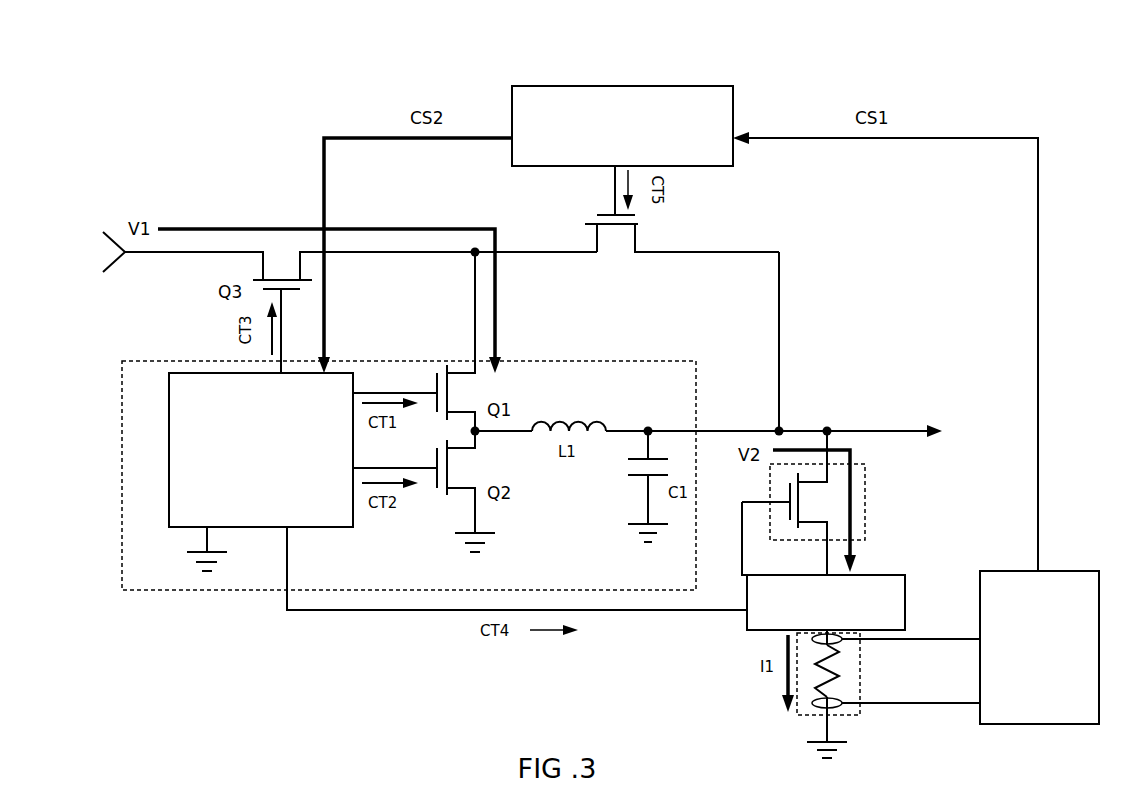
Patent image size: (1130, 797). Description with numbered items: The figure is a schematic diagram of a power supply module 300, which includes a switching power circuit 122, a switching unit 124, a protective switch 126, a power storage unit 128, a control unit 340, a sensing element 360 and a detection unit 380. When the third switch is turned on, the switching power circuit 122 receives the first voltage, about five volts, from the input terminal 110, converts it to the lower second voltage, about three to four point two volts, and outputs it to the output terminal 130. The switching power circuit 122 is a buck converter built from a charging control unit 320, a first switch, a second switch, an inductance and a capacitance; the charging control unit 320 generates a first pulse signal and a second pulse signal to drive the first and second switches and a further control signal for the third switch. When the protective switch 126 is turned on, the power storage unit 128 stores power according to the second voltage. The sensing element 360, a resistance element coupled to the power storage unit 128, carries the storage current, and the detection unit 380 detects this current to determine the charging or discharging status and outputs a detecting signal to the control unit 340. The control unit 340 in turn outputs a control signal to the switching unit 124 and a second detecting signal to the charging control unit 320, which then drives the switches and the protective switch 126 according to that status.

The power supply module 300 is at (568, 391).
The control unit 340 is at (622, 126).
The switching unit 124 is at (645, 228).
The input terminal 110 is at (471, 257).
The switching power circuit 122 is at (510, 360).
The charging control unit 320 is at (261, 472).
The output terminal 130 is at (785, 425).
The protective switch 126 is at (866, 488).
The power storage unit 128 is at (907, 605).
The sensing element 360 is at (861, 665).
The detection unit 380 is at (1039, 647).